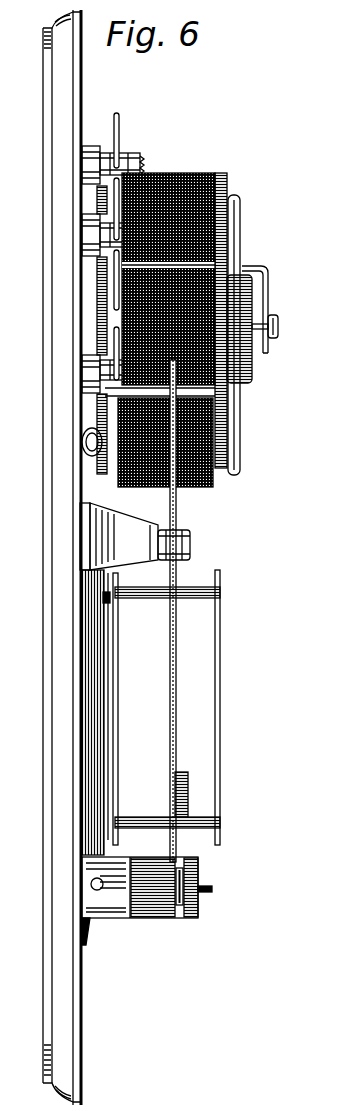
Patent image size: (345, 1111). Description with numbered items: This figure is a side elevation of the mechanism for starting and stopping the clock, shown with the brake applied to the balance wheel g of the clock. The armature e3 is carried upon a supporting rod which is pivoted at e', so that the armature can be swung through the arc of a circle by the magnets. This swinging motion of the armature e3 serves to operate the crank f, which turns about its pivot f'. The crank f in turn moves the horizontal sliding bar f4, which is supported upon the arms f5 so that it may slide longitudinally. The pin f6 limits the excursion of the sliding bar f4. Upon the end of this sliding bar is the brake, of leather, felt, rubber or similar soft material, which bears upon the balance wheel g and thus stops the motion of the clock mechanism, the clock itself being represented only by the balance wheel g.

The armature e3 is at (242, 210).
The pivot e' is at (284, 309).
The crank f is at (196, 611).
The pivot f' is at (201, 544).
The balance wheel g is at (196, 771).
The arms f5 is at (152, 905).
The sliding bar f4 is at (181, 906).
The pin f6 is at (214, 889).